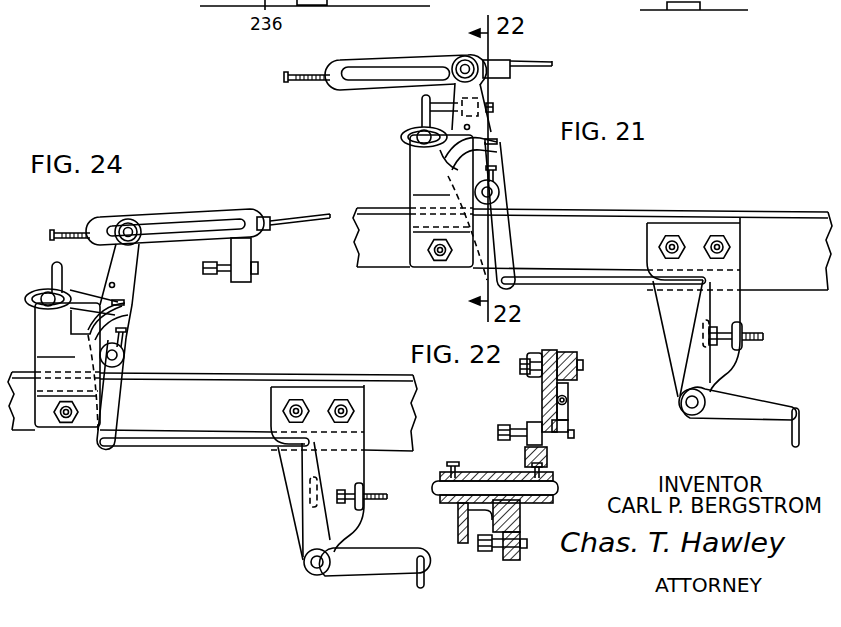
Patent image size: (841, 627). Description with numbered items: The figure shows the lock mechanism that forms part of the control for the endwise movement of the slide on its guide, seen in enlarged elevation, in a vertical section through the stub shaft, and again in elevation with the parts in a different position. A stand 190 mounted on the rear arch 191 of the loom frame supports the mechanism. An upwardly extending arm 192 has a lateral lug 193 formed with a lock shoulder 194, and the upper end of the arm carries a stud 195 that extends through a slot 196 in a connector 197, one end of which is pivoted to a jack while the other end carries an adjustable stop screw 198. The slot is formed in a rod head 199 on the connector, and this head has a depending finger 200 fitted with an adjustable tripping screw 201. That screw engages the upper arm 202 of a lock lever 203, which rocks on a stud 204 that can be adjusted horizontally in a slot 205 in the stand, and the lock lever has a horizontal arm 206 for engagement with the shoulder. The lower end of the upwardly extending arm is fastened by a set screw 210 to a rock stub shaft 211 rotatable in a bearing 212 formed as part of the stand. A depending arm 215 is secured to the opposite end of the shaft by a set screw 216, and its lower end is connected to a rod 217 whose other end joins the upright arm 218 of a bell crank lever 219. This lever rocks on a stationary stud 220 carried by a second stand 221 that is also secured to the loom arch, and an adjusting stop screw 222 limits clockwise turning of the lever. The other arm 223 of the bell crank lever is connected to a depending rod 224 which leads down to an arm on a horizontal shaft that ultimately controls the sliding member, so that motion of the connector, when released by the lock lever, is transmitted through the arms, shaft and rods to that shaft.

In FIG. 21, the stand 190 is at (421, 268).
In FIG. 24, the stand 190 is at (48, 420).
In FIG. 22, the stand 190 is at (490, 552).
In FIG. 21, the rear arch 191 is at (608, 226).
In FIG. 24, the rear arch 191 is at (257, 393).
In FIG. 22, the rear arch 191 is at (511, 548).
In FIG. 21, the upwardly extending arm 192 is at (483, 126).
In FIG. 24, the upwardly extending arm 192 is at (130, 277).
In FIG. 22, the upwardly extending arm 192 is at (544, 398).
In FIG. 21, the lateral lug 193 is at (500, 149).
In FIG. 24, the lateral lug 193 is at (136, 312).
In FIG. 22, the lateral lug 193 is at (529, 451).
In FIG. 21, the lock shoulder 194 is at (498, 143).
In FIG. 24, the lock shoulder 194 is at (126, 311).
In FIG. 21, the stud 195 is at (462, 61).
In FIG. 24, the stud 195 is at (129, 220).
In FIG. 22, the stud 195 is at (519, 367).
In FIG. 21, the slot 196 is at (423, 72).
In FIG. 24, the slot 196 is at (229, 222).
In FIG. 21, the connector 197 is at (543, 51).
In FIG. 24, the connector 197 is at (293, 213).
In FIG. 22, the connector 197 is at (567, 360).
In FIG. 21, the adjustable stop screw 198 is at (292, 84).
In FIG. 24, the adjustable stop screw 198 is at (63, 231).
In FIG. 21, the rod head 199 is at (352, 87).
In FIG. 24, the rod head 199 is at (181, 215).
In FIG. 22, the rod head 199 is at (583, 377).
In FIG. 21, the depending finger 200 is at (476, 97).
In FIG. 24, the depending finger 200 is at (252, 243).
In FIG. 22, the depending finger 200 is at (568, 390).
In FIG. 21, the adjustable tripping screw 201 is at (496, 108).
In FIG. 24, the adjustable tripping screw 201 is at (216, 275).
In FIG. 22, the adjustable tripping screw 201 is at (567, 404).
In FIG. 21, the upper arm 202 is at (421, 105).
In FIG. 24, the upper arm 202 is at (53, 268).
In FIG. 22, the upper arm 202 is at (569, 430).
In FIG. 21, the lock lever 203 is at (427, 122).
In FIG. 24, the lock lever 203 is at (79, 297).
In FIG. 22, the lock lever 203 is at (524, 427).
In FIG. 21, the stud 204 is at (410, 148).
In FIG. 24, the stud 204 is at (50, 306).
In FIG. 22, the stud 204 is at (574, 443).
In FIG. 21, the slot 205 is at (402, 138).
In FIG. 24, the slot 205 is at (38, 296).
In FIG. 21, the horizontal arm 206 is at (453, 149).
In FIG. 24, the horizontal arm 206 is at (92, 305).
In FIG. 22, the set screw 210 is at (547, 467).
In FIG. 21, the rock stub shaft 211 is at (503, 193).
In FIG. 24, the rock stub shaft 211 is at (121, 360).
In FIG. 22, the rock stub shaft 211 is at (547, 497).
In FIG. 21, the bearing 212 is at (431, 200).
In FIG. 24, the bearing 212 is at (87, 360).
In FIG. 22, the bearing 212 is at (471, 471).
In FIG. 21, the depending arm 215 is at (504, 239).
In FIG. 24, the depending arm 215 is at (98, 446).
In FIG. 22, the depending arm 215 is at (460, 523).
In FIG. 21, the set screw 216 is at (498, 173).
In FIG. 24, the set screw 216 is at (130, 336).
In FIG. 22, the set screw 216 is at (452, 464).
In FIG. 21, the rod 217 is at (597, 276).
In FIG. 24, the rod 217 is at (192, 447).
In FIG. 21, the upright arm 218 is at (704, 306).
In FIG. 24, the upright arm 218 is at (299, 466).
In FIG. 21, the bell crank lever 219 is at (696, 378).
In FIG. 24, the bell crank lever 219 is at (310, 515).
In FIG. 21, the stationary stud 220 is at (706, 404).
In FIG. 24, the stationary stud 220 is at (302, 563).
In FIG. 21, the stand 221 is at (730, 309).
In FIG. 24, the stand 221 is at (350, 464).
In FIG. 21, the adjusting stop screw 222 is at (764, 337).
In FIG. 24, the adjusting stop screw 222 is at (378, 491).
In FIG. 21, the arm 223 is at (770, 405).
In FIG. 24, the arm 223 is at (353, 556).
In FIG. 21, the depending rod 224 is at (790, 437).
In FIG. 24, the depending rod 224 is at (416, 563).